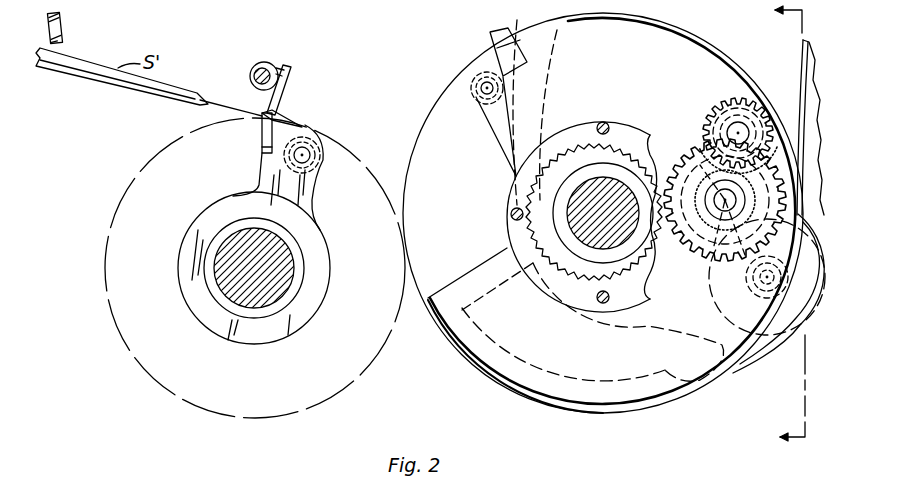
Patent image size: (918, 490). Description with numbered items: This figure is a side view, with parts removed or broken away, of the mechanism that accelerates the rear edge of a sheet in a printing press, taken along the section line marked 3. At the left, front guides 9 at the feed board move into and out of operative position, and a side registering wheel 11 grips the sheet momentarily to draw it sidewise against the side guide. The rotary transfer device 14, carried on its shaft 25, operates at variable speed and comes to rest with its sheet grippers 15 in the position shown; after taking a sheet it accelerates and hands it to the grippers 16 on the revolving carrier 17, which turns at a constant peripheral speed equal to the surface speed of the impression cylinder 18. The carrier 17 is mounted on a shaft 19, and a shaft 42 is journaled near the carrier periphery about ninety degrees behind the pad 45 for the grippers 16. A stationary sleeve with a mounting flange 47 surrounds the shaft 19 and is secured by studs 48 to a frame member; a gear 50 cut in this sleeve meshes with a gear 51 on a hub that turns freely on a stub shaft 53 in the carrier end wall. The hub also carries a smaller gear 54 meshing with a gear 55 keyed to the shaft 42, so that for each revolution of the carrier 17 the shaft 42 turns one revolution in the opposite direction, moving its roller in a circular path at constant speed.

The side registering wheel 11 is at (62, 27).
The front guides 9 is at (275, 88).
The sheet grippers 15 is at (300, 127).
The rotary transfer device 14 is at (320, 251).
The shaft 25 is at (288, 287).
The grippers 16 is at (490, 40).
The pad 45 is at (510, 43).
The revolving carrier 17 is at (662, 60).
The impression cylinder 18 is at (802, 82).
The mounting flange 47 is at (567, 140).
The studs 48 is at (607, 124).
The shaft 19 is at (598, 195).
The shaft 42 is at (731, 131).
The gear 55 is at (728, 105).
The smaller gear 54 is at (700, 172).
The stub shaft 53 is at (718, 204).
The gear 50 is at (721, 209).
The gear 51 is at (755, 277).
The section line 3- 3 is at (781, 226).